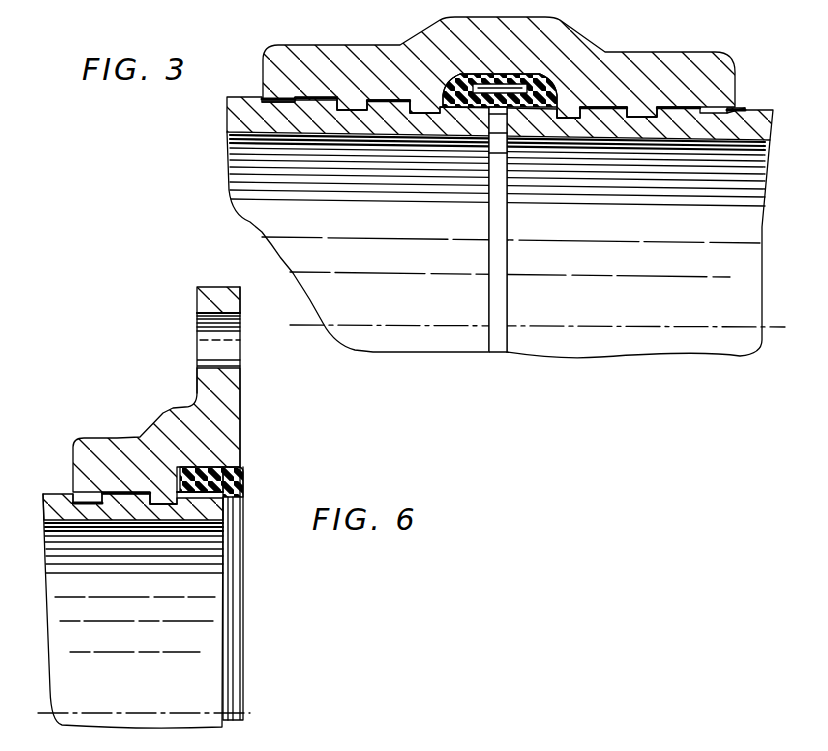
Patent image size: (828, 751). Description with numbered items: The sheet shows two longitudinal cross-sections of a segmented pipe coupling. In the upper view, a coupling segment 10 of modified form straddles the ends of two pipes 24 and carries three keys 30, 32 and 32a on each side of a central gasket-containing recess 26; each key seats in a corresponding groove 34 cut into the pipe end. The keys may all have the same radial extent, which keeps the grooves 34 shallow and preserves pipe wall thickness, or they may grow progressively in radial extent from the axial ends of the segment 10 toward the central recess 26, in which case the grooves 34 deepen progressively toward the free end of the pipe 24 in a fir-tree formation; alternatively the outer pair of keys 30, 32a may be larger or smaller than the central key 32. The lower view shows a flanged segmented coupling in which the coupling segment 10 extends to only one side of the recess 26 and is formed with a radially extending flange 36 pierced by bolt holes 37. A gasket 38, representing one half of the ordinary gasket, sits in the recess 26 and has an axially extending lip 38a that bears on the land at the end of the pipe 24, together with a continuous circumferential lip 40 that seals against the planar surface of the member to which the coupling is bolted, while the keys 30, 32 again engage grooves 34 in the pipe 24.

In FIG. 3, the coupling segment 10 is at (499, 64).
In FIG. 3, the pipe 24 is at (227, 97).
In FIG. 6, the pipe 24 is at (57, 493).
In FIG. 6, the central recess 26 is at (228, 460).
In FIG. 3, the key 30 is at (427, 107).
In FIG. 6, the key 30 is at (160, 497).
In FIG. 3, the key 32 is at (352, 100).
In FIG. 6, the key 32 is at (102, 492).
In FIG. 3, the key 32a is at (277, 97).
In FIG. 3, the grooves 34 is at (412, 110).
In FIG. 6, the grooves 34 is at (150, 507).
In FIG. 6, the radially extending flange 36 is at (240, 303).
In FIG. 6, the bolt holes 37 is at (240, 365).
In FIG. 6, the gasket 38 is at (240, 430).
In FIG. 6, the axially extending lip 38a is at (245, 488).
In FIG. 6, the continuous circumferential lip 40 is at (245, 478).